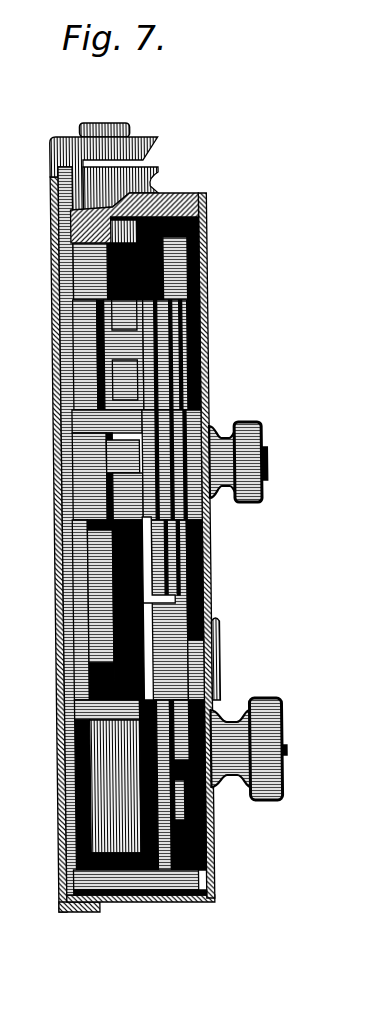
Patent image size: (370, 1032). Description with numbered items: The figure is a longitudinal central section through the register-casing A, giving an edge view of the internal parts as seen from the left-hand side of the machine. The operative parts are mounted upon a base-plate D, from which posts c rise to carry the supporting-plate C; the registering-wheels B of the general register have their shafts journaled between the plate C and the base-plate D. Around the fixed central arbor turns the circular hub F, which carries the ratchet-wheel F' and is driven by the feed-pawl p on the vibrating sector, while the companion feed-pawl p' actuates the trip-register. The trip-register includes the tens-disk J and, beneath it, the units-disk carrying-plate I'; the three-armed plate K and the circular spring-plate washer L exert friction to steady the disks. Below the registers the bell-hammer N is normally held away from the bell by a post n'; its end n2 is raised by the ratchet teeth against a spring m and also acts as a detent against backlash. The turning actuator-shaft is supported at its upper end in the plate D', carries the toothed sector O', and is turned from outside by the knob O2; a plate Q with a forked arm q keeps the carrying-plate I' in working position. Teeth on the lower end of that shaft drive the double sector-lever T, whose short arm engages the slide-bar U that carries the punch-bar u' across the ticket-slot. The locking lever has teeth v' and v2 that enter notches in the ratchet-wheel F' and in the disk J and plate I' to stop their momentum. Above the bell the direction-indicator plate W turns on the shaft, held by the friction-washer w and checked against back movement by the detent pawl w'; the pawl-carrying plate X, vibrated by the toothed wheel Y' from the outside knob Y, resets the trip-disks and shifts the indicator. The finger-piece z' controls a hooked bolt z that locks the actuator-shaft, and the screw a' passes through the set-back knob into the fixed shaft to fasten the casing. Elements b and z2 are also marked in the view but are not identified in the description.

The tooth of locking lever v' is at (122, 166).
The punch or cutter-bar u' is at (121, 202).
The slide-bar U is at (60, 270).
The top plate z2 is at (204, 278).
The tens-disk J is at (204, 300).
The supporting-plate C is at (204, 335).
The units-disk carrying-plate I' is at (188, 355).
The three-armed plate K is at (204, 383).
The spring-plate washer L is at (204, 408).
The pin b is at (124, 314).
The registering-wheels B is at (124, 380).
The posts c is at (107, 422).
The circular hub F is at (122, 456).
The feed-pawl p is at (128, 496).
The base-plate D is at (50, 544).
The turning-knob Y is at (250, 450).
The toothed wheel Y' is at (227, 475).
The screw a' is at (272, 463).
The pawl-carrying plate X is at (204, 556).
The end of hammer-arm n2 is at (56, 554).
The ratchet-wheel F' is at (66, 507).
The tooth of locking lever v2 is at (204, 590).
The spring m is at (60, 590).
The finger-piece z' is at (209, 648).
The post or projection n' is at (59, 610).
The feed-pawl p' is at (228, 659).
The double sector-lever T is at (80, 645).
The bell-hammer N is at (100, 596).
The knob or handle O2 is at (270, 706).
The detent dog or pawl w' is at (230, 735).
The plate Q is at (152, 703).
The forked arm q is at (166, 713).
The toothed sector O' is at (116, 786).
The spring or friction-washer w is at (202, 785).
The hooked end bolt z is at (205, 807).
The direction-indicator plate W is at (204, 855).
The casing A is at (49, 833).
The plate D' is at (166, 815).